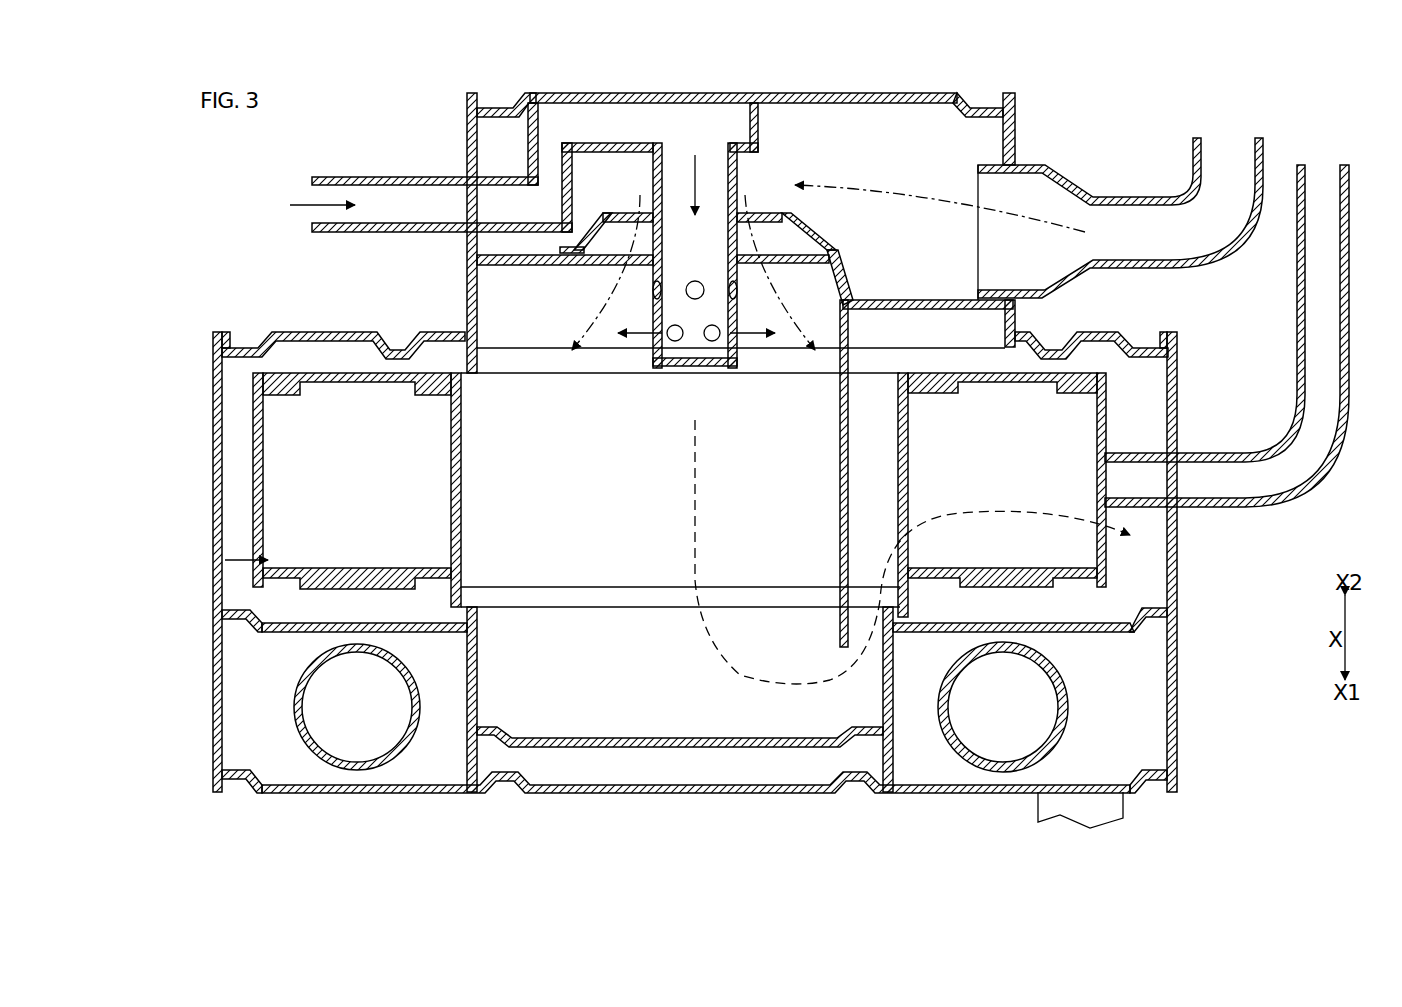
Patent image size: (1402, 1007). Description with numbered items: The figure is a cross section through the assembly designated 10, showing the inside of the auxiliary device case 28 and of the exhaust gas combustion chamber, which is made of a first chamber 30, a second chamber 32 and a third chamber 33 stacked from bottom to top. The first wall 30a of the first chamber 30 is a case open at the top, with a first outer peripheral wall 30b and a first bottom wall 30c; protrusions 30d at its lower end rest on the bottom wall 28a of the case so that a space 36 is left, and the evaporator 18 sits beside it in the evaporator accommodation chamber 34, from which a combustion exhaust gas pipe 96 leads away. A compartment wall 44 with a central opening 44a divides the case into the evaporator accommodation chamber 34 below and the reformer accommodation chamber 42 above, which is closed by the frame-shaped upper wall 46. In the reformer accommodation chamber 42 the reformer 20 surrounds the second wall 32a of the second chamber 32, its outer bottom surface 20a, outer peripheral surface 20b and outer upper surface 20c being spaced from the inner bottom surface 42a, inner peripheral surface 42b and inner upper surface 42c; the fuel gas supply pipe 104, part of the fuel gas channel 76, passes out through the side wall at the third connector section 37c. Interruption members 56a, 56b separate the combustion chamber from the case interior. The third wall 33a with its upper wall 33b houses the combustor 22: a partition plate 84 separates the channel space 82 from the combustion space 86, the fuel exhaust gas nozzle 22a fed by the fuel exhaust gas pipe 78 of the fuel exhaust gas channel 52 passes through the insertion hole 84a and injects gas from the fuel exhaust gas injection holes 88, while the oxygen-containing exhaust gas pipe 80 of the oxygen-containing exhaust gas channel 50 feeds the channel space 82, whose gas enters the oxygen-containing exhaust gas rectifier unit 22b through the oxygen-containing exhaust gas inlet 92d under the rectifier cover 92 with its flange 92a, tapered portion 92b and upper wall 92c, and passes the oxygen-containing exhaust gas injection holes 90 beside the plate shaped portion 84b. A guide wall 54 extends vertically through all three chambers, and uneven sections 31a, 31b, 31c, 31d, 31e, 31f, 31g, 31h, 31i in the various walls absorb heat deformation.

The fuel supply device 10 is at (1283, 99).
The evaporator 18 is at (292, 722).
The reformer 20 is at (306, 449).
The outer bottom surface 20a is at (372, 580).
The outer peripheral surface 20b is at (253, 435).
The outer upper surface 20c is at (330, 372).
The combustor 22 is at (785, 140).
The fuel exhaust gas nozzle 22a is at (738, 180).
The oxygen-containing exhaust gas rectifier unit 22b is at (882, 228).
The auxiliary device case 28 is at (1178, 668).
The bottom wall 28a is at (655, 794).
The first chamber 30 is at (696, 631).
The first wall 30a is at (685, 699).
The first outer peripheral wall 30b is at (478, 682).
The first bottom wall 30c is at (680, 722).
The protrusion 30d is at (505, 794).
The uneven section 31a is at (843, 745).
The uneven section 31b is at (520, 795).
The uneven section 31c is at (240, 785).
The uneven section 31d is at (312, 580).
The uneven section 31e is at (940, 372).
The uneven section 31f is at (230, 625).
The uneven section 31g is at (395, 345).
The uneven section 31h is at (245, 345).
The uneven section 31i is at (485, 108).
The second chamber 32 is at (995, 495).
The second wall 32a is at (910, 470).
The third chamber 33 is at (495, 280).
The third wall 33a is at (1016, 140).
The upper wall 33b is at (720, 93).
The evaporator accommodation chamber 34 is at (1145, 714).
The space 36 is at (637, 738).
The third connector section 37c is at (1185, 512).
The reformer accommodation chamber 42 is at (222, 560).
The inner bottom surface 42a is at (240, 612).
The inner peripheral surface 42b is at (213, 478).
The inner upper surface 42c is at (366, 332).
The compartment wall 44 is at (272, 633).
The opening 44a is at (478, 627).
The upper wall 46 is at (283, 332).
The oxygen-containing exhaust gas channel 50 is at (1000, 188).
The fuel exhaust gas channel 52 is at (608, 143).
The guide wall 54 is at (840, 465).
The interruption member 56a is at (470, 600).
The interruption member 56b is at (465, 365).
The fuel gas channel 76 is at (1300, 280).
The fuel exhaust gas pipe 78 is at (352, 177).
The oxygen-containing exhaust gas pipe 80 is at (1193, 160).
The channel space 82 is at (885, 130).
The partition plate 84 is at (940, 300).
The insertion hole 84a is at (737, 262).
The plate shaped portion 84b is at (745, 265).
The combustion space 86 is at (466, 305).
The fuel exhaust gas injection holes 88 is at (660, 340).
The oxygen-containing exhaust gas injection holes 90 is at (800, 255).
The rectifier cover 92 is at (790, 225).
The flange 92a is at (600, 245).
The tapered portion 92b is at (590, 255).
The upper wall 92c is at (610, 215).
The oxygen-containing exhaust gas inlet 92d is at (635, 215).
The combustion exhaust gas pipe 96 is at (1045, 815).
The fuel gas supply pipe 104 is at (1350, 178).